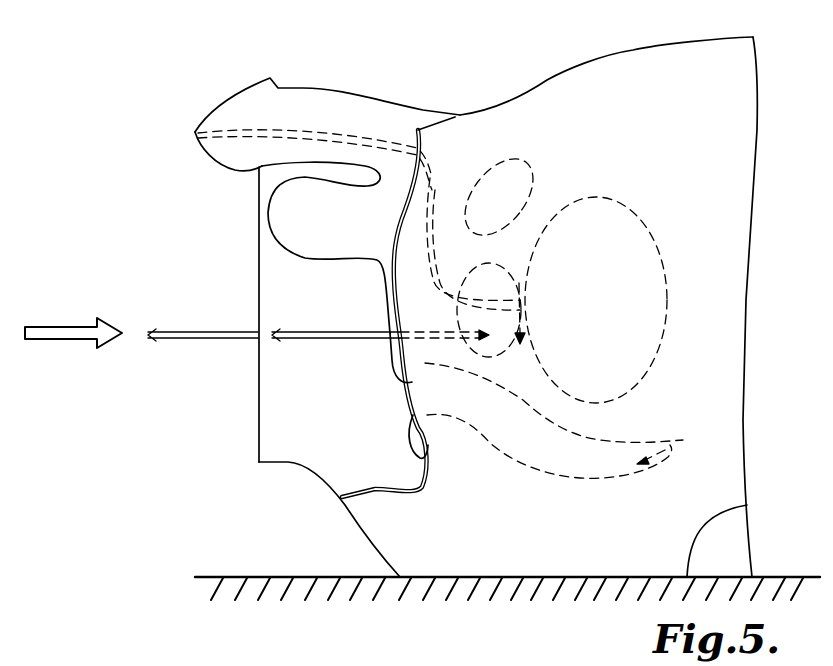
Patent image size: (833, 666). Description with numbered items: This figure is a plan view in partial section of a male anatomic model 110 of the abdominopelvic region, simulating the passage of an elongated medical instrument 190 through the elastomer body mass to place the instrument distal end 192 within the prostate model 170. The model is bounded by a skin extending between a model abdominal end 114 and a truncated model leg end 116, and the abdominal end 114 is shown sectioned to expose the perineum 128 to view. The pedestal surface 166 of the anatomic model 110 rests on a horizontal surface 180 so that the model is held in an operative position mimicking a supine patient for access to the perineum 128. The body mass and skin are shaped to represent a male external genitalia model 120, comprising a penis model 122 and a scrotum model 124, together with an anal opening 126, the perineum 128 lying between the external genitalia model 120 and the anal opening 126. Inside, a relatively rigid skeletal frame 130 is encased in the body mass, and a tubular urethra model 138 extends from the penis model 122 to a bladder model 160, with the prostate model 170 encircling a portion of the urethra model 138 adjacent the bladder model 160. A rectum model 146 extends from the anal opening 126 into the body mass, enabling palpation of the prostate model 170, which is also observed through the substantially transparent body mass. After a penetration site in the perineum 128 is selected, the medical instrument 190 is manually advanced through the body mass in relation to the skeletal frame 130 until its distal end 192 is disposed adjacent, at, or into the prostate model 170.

The male anatomic model 110 is at (802, 145).
The model abdominal end 114 is at (749, 216).
The truncated model leg end 116 is at (259, 432).
The male external genitalia model 120 is at (329, 84).
The penis model 122 is at (243, 88).
The scrotum model 124 is at (268, 210).
The anal opening 126 is at (405, 416).
The perineum 128 is at (388, 356).
The skeletal frame 130 is at (504, 172).
The urethra model 138 is at (430, 178).
The rectum model 146 is at (663, 450).
The bladder model 160 is at (636, 316).
The pedestal surface 166 is at (747, 505).
The prostate model 170 is at (511, 260).
The horizontal surface 180 is at (777, 573).
The elongated medical instrument 190 is at (184, 325).
The instrument distal end 192 is at (453, 313).